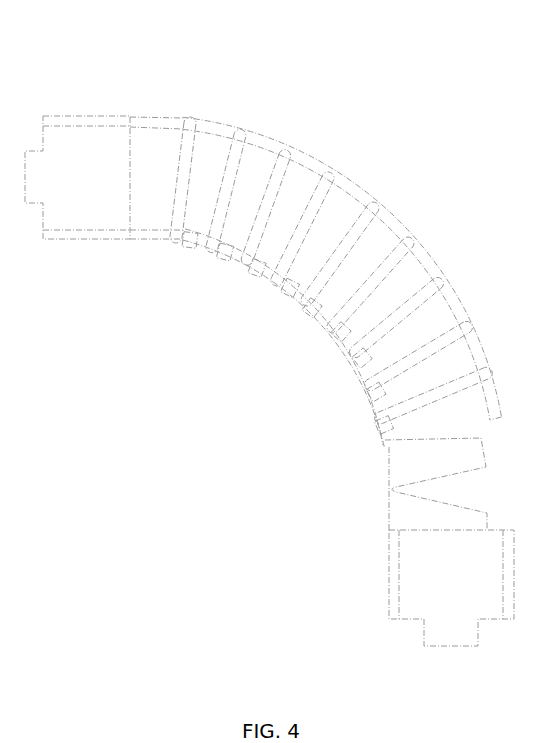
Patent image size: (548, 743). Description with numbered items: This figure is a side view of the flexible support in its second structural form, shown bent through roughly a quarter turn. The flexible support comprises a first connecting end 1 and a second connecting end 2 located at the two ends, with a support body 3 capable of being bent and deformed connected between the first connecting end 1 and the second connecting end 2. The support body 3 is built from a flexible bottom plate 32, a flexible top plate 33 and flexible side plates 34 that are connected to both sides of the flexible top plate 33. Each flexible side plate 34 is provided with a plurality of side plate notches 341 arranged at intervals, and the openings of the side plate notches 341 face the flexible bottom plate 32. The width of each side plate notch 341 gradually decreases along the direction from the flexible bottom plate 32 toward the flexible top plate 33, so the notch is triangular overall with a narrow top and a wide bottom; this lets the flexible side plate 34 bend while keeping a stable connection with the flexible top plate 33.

The first connecting end 1 is at (394, 574).
The second connecting end 2 is at (87, 124).
The support body 3 is at (320, 294).
The flexible bottom plate 32 is at (271, 308).
The flexible top plate 33 is at (314, 145).
The flexible side plate 34 is at (417, 278).
The side plate notch 341 is at (177, 216).